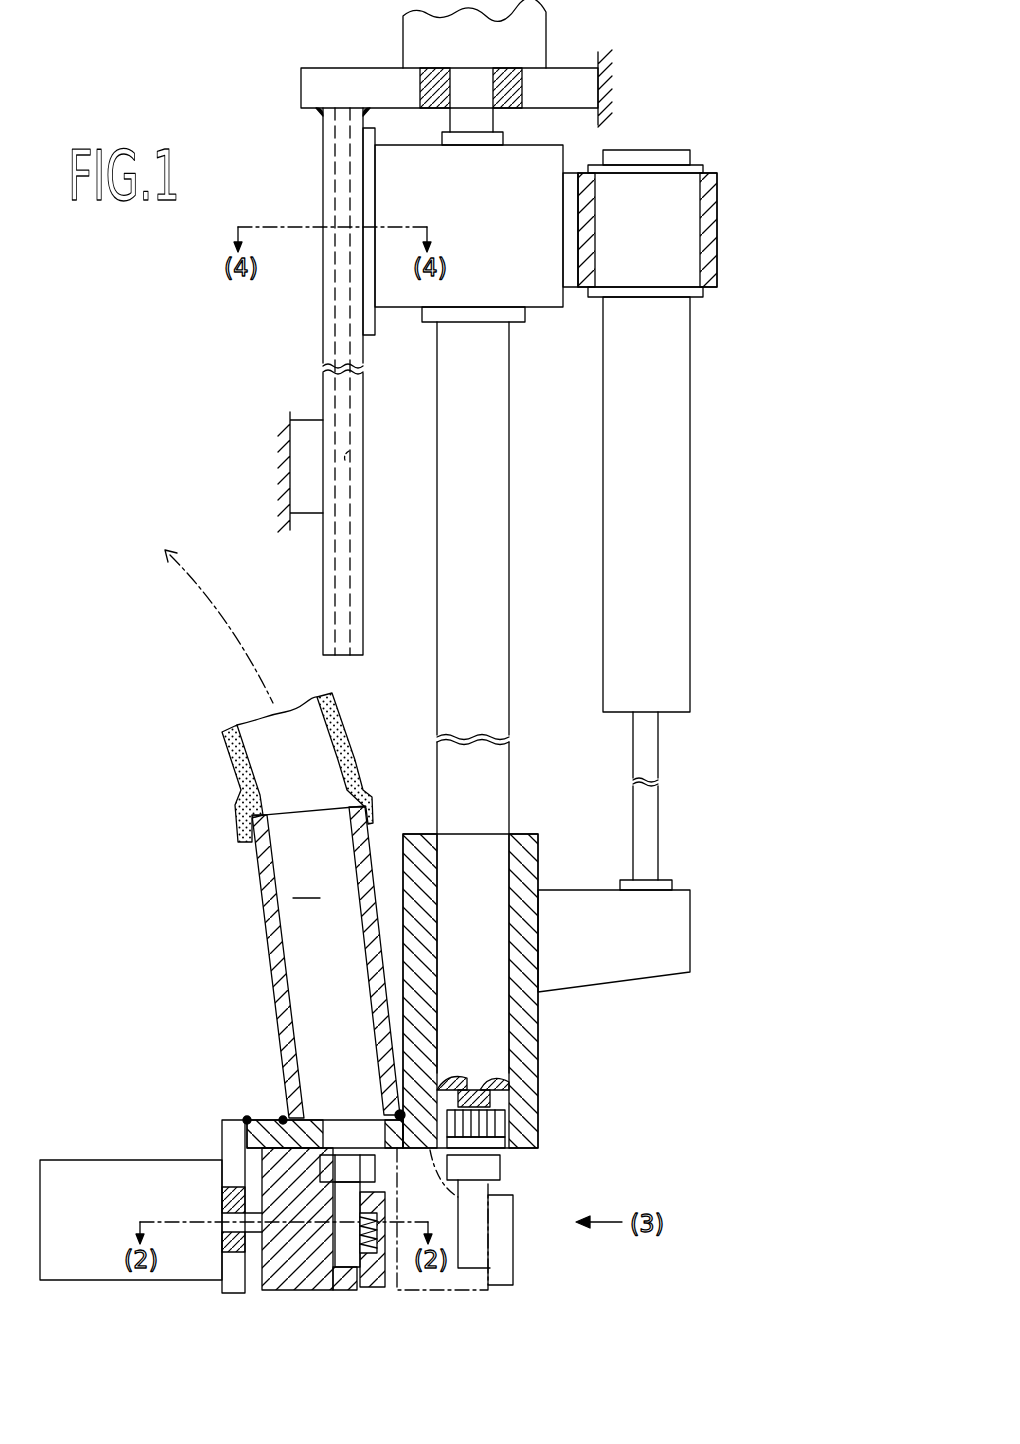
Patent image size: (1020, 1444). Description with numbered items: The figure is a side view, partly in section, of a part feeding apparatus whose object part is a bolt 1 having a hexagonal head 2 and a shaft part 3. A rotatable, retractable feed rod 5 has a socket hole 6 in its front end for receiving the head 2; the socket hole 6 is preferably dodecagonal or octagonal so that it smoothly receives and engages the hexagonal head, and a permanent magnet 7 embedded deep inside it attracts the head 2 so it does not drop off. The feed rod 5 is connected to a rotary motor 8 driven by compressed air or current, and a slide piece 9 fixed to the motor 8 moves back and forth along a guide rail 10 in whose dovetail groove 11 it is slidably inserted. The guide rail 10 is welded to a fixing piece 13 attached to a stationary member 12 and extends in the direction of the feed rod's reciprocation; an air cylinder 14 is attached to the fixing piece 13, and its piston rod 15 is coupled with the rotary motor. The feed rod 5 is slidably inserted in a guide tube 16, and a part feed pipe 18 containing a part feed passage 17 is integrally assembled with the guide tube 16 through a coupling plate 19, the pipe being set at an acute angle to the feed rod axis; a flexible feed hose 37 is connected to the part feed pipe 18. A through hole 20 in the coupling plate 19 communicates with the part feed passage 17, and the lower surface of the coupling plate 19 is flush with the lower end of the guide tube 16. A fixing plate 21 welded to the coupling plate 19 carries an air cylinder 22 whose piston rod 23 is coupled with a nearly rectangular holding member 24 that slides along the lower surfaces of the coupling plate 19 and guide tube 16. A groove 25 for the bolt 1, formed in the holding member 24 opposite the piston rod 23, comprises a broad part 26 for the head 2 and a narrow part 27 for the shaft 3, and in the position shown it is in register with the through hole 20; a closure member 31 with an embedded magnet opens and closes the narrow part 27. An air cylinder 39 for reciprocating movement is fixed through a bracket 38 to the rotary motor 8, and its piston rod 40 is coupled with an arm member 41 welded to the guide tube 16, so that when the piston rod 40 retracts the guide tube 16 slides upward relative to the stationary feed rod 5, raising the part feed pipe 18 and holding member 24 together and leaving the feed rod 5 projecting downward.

The bolt 1 is at (363, 1155).
The hexagonal head 2 is at (375, 1168).
The shaft part 3 is at (352, 1202).
The feed rod 5 is at (509, 770).
The socket hole 6 is at (500, 1162).
The magnet 7 is at (477, 1100).
The rotary motor 8 is at (546, 308).
The slide piece 9 is at (375, 286).
The guide rail 10 is at (363, 418).
The dovetail groove 11 is at (352, 462).
The stationary member 12 is at (597, 77).
The fixing piece 13 is at (301, 90).
The air cylinder 14 is at (403, 47).
The piston rod 15 is at (503, 80).
The guide tube 16 is at (538, 840).
The part feed passage 17 is at (311, 883).
The part feed pipe 18 is at (263, 942).
The coupling plate 19 is at (248, 1120).
The through hole 20 is at (292, 1118).
The fixing plate 21 is at (222, 1136).
The air cylinder 22 is at (120, 1160).
The piston rod 23 is at (222, 1205).
The holding member 24 is at (292, 1290).
The groove 25 is at (337, 1262).
The broad part 26 is at (308, 1160).
The narrow part 27 is at (342, 1270).
The closure member 31 is at (372, 1283).
The feed hose 37 is at (235, 762).
The bracket 38 is at (717, 212).
The air cylinder 39 is at (690, 466).
The piston rod 40 is at (658, 760).
The arm member 41 is at (690, 942).